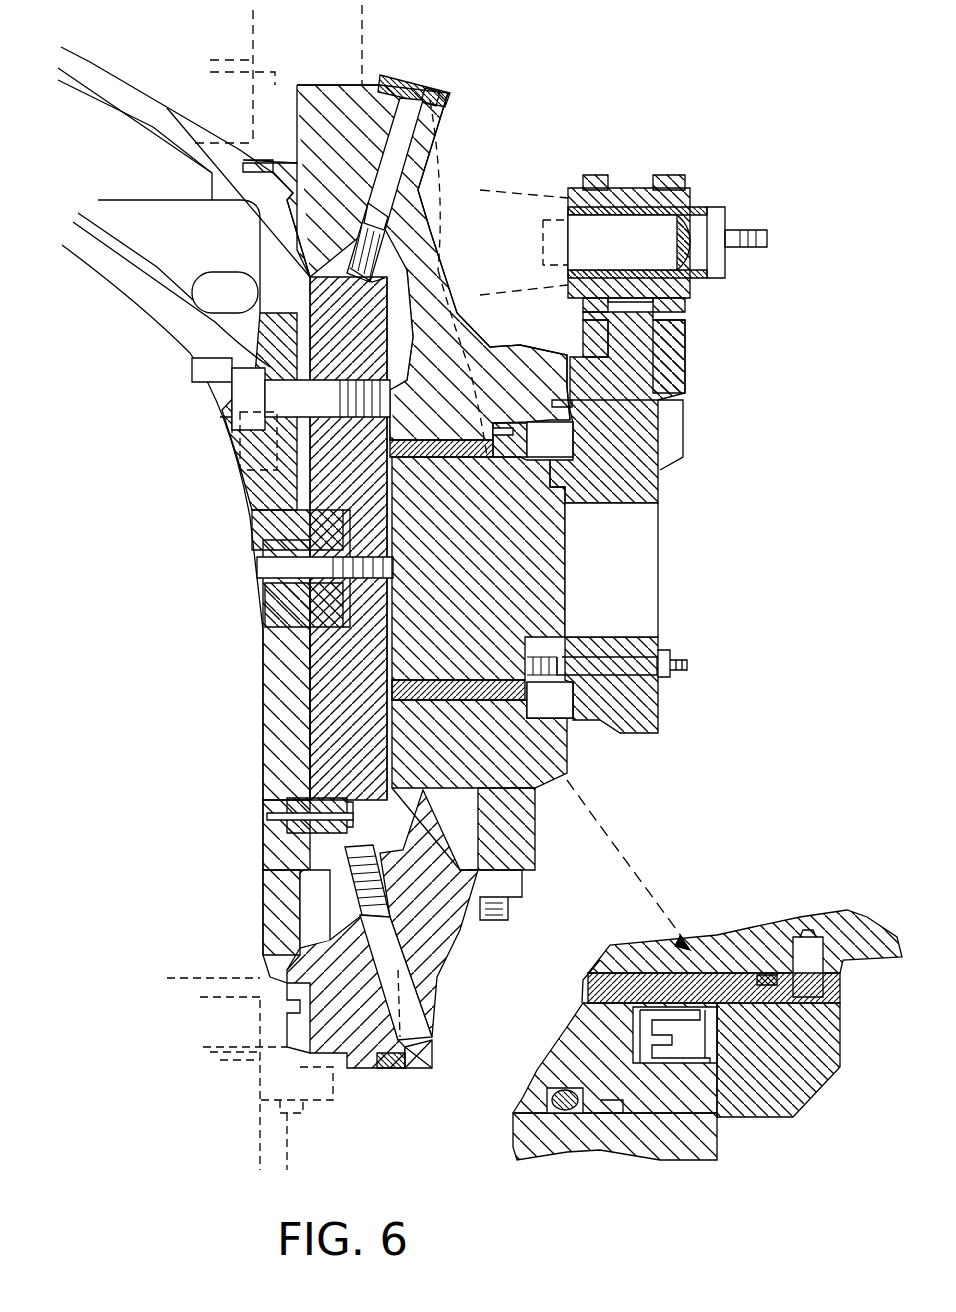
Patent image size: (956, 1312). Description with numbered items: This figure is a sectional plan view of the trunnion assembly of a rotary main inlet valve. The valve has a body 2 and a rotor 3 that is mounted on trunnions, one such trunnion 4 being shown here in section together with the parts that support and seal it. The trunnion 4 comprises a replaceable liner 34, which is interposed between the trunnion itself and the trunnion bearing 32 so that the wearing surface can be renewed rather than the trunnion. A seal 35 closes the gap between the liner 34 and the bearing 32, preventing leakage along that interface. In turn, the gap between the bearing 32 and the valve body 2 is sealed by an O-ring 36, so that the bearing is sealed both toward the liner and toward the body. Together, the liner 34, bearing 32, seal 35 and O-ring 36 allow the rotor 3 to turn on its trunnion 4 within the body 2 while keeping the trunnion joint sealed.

The body 2 is at (660, 1150).
The rotor 3 is at (147, 102).
The trunnion 4 is at (535, 553).
The trunnion bearing 32 is at (457, 457).
The replaceable liner 34 is at (480, 677).
The seal 35 is at (800, 1070).
The O-ring 36 is at (560, 1115).